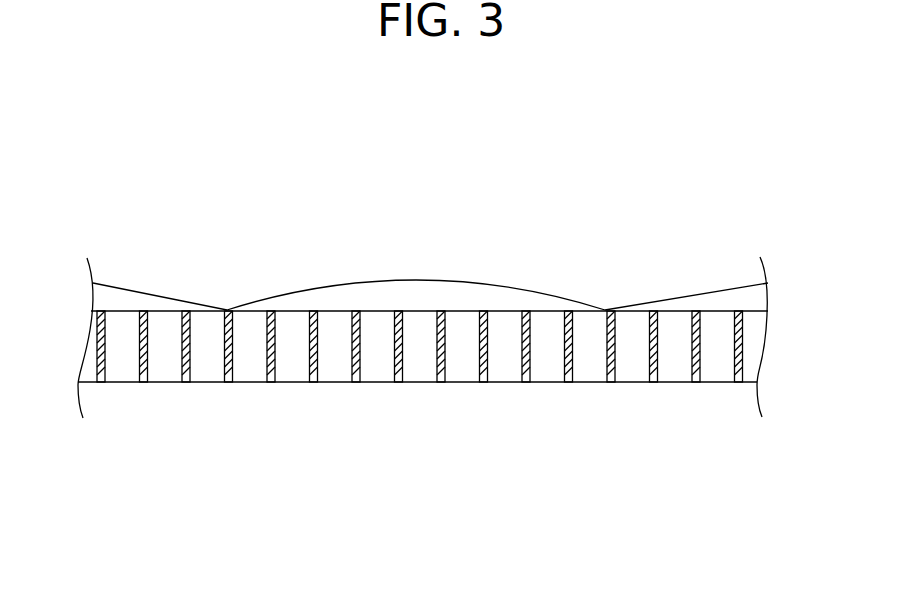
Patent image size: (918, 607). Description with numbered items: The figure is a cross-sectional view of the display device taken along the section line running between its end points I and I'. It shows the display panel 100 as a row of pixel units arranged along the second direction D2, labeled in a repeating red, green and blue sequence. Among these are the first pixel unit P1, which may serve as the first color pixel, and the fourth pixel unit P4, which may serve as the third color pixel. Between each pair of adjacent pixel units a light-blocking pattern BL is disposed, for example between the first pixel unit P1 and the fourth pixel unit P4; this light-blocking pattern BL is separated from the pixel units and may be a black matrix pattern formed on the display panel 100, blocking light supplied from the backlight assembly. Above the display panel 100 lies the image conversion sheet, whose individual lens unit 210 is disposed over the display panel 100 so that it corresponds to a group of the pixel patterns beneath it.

The display panel 100 is at (798, 312).
The lens unit 210 is at (417, 297).
The second direction D2 is at (103, 220).
The first pixel unit P1 is at (250, 375).
The fourth pixel unit P4 is at (292, 375).
The light-blocking pattern BL is at (352, 382).
The section line I is at (65, 414).
The section line I' is at (780, 414).